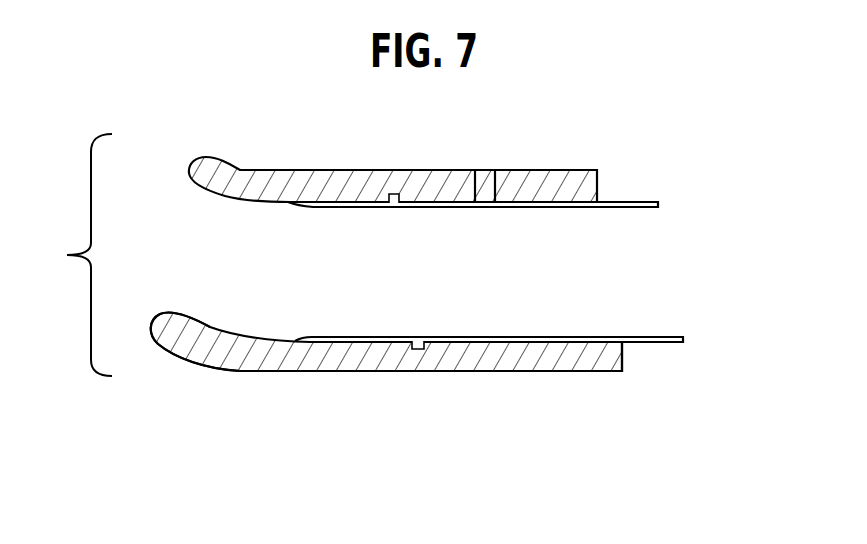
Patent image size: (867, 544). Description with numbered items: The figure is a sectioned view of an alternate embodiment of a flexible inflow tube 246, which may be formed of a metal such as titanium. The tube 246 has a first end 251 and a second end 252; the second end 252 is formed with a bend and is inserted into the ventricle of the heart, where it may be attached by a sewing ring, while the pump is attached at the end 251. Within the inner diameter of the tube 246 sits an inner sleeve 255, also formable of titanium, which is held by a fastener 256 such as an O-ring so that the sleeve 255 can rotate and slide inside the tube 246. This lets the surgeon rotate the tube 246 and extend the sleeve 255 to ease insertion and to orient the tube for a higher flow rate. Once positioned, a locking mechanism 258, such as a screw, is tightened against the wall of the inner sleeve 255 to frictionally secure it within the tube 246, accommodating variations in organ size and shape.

The inflow tube 246 is at (318, 372).
The first end 251 is at (580, 366).
The second end 252 is at (186, 355).
The inner sleeve 255 is at (661, 337).
The fastener 256 is at (394, 203).
The locking mechanism 258 is at (485, 170).